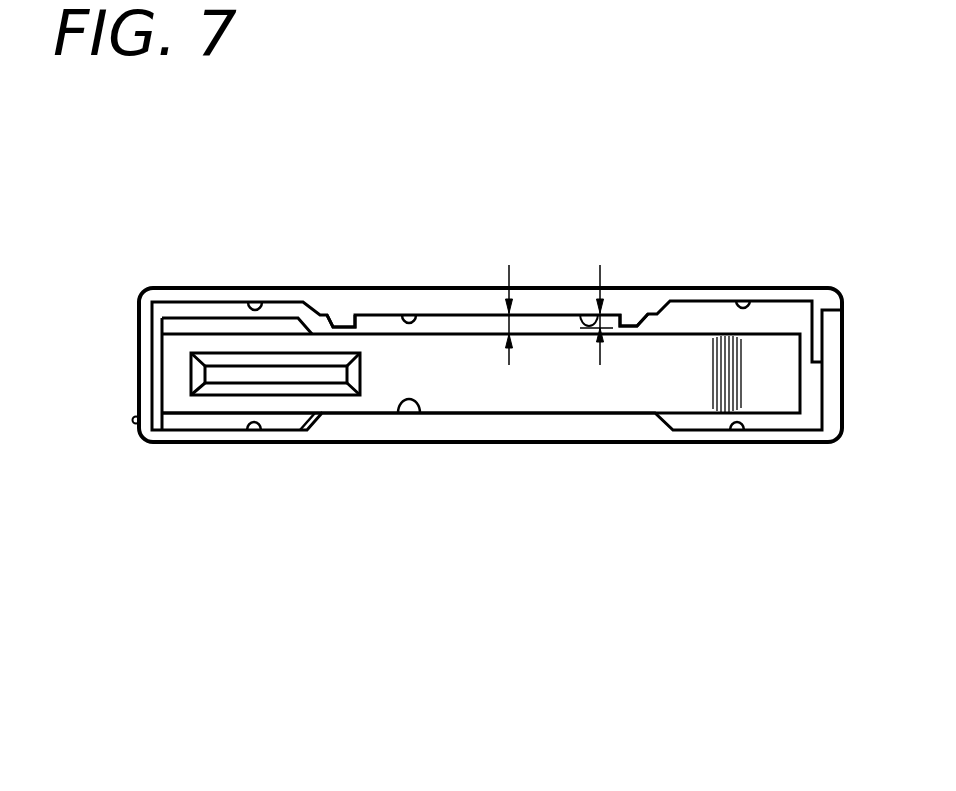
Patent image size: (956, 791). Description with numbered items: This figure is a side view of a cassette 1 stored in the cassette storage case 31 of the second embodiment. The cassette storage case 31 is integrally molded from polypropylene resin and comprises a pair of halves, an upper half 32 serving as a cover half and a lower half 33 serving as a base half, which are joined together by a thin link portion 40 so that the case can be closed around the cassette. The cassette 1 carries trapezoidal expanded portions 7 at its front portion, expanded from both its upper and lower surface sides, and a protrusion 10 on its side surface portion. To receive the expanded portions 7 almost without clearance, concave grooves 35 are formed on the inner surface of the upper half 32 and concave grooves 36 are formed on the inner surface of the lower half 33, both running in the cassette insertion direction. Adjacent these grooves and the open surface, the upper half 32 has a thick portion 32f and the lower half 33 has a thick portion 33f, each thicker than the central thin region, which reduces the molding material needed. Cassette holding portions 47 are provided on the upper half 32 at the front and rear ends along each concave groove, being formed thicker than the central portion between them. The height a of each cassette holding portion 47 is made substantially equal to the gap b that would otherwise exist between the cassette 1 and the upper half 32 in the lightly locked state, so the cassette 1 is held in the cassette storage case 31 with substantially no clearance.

The cassette 1 is at (592, 385).
The expanded portions 7 is at (206, 328).
The protrusion 10 is at (334, 372).
The cassette storage case 31 is at (808, 278).
The upper half 32 is at (537, 288).
The thick portion 32f is at (412, 313).
The lower half 33 is at (530, 443).
The thick portion 33f is at (418, 410).
The concave grooves 35 is at (258, 303).
The concave grooves 36 is at (255, 426).
The thin link portion 40 is at (132, 419).
The cassette holding portions 47 is at (345, 322).
The height of cassette holding portion a is at (600, 265).
The gap between cassette and upper half b is at (509, 265).